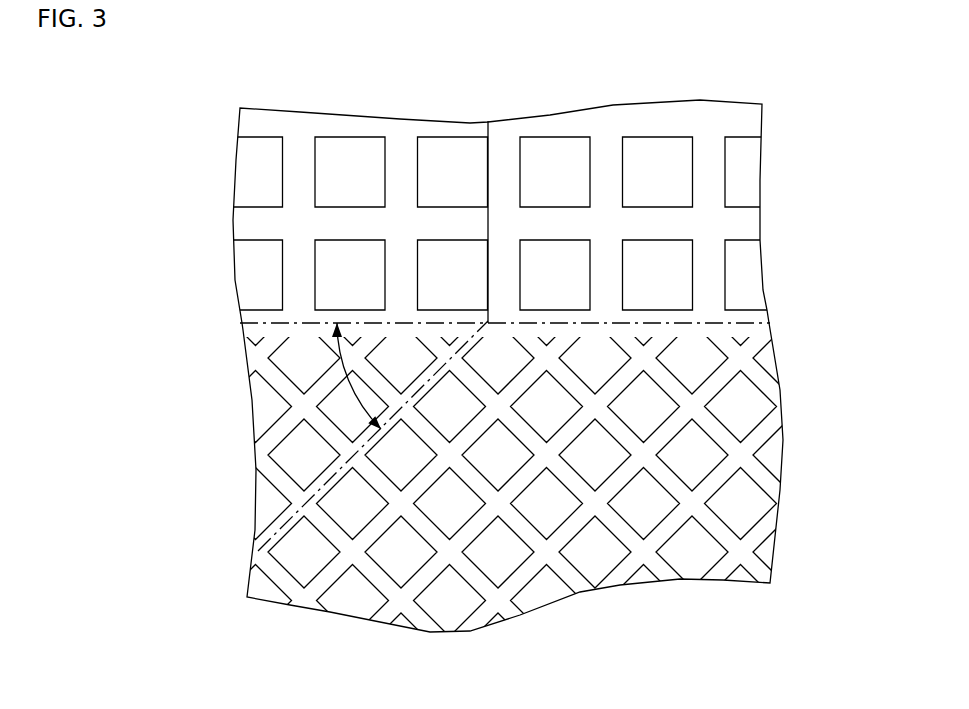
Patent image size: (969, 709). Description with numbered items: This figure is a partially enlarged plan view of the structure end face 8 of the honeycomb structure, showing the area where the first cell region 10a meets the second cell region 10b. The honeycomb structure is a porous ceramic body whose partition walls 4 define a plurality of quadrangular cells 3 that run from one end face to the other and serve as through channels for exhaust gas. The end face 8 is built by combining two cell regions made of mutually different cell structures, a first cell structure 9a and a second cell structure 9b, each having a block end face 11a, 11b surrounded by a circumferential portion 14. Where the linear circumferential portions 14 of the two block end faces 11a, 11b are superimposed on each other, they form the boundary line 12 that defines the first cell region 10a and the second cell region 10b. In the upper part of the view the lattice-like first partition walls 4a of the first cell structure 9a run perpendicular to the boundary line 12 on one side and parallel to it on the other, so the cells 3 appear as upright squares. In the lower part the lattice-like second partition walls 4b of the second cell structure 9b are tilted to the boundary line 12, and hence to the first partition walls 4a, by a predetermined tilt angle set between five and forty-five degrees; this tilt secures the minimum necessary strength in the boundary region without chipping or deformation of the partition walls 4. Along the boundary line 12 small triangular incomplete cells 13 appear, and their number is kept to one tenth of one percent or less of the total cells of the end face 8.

The cell 3 is at (555, 138).
The partition wall 4 is at (530, 411).
The first partition wall 4a is at (708, 177).
The second partition wall 4b is at (737, 457).
The structure end face 8 is at (465, 337).
The first cell structure 9a is at (444, 183).
The second cell structure 9b is at (465, 477).
The first cell region 10a is at (444, 183).
The second cell region 10b is at (465, 477).
The block end face 11a is at (703, 127).
The block end face 11b is at (731, 550).
The boundary line 12 is at (747, 322).
The incomplete cell 13 is at (246, 341).
The circumferential portion 14 is at (576, 230).